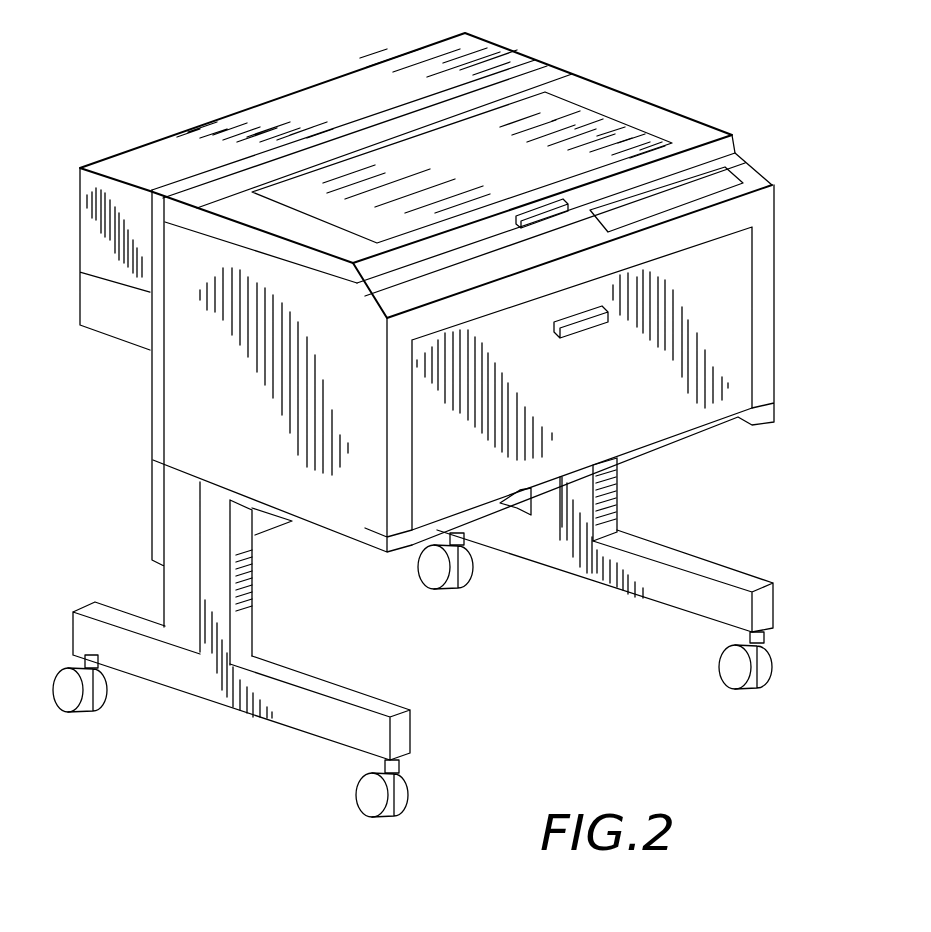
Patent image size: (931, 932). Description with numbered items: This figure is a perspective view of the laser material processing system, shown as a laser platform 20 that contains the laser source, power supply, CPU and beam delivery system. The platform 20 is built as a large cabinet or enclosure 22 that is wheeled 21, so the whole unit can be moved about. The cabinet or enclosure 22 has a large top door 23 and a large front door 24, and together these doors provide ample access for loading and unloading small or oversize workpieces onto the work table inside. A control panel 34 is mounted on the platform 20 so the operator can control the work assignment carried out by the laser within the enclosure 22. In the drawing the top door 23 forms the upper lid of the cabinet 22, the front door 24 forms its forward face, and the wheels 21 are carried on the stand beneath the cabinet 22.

The laser platform 20 is at (624, 78).
The wheels 21 is at (356, 793).
The cabinet or enclosure 22 is at (217, 342).
The top door 23 is at (675, 125).
The front door 24 is at (733, 258).
The control panel 34 is at (718, 183).